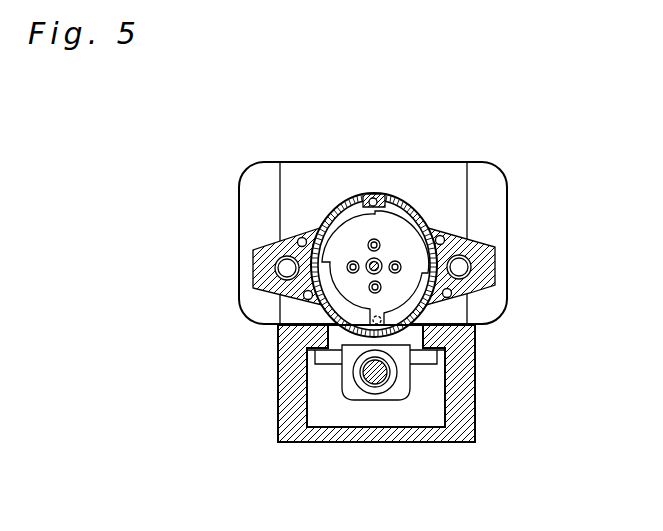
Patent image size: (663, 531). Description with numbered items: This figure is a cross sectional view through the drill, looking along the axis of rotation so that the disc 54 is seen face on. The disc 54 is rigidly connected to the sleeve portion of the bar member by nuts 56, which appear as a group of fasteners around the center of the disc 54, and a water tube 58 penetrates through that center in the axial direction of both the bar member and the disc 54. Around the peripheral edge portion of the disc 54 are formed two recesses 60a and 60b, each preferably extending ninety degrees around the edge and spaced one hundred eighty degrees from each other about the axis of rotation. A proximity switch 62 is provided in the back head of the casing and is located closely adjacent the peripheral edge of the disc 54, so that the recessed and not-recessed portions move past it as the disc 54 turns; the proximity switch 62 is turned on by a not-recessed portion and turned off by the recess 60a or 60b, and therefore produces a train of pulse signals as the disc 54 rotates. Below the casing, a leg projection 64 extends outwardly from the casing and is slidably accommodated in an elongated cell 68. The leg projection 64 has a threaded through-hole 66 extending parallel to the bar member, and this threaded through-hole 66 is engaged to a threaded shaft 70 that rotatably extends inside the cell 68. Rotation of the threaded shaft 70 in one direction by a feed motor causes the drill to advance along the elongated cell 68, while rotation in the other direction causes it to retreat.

The disc 54 is at (410, 248).
The nuts 56 is at (353, 261).
The water tube 58 is at (378, 258).
The recess 60a is at (323, 227).
The recess 60b is at (388, 317).
The proximity switch 62 is at (327, 328).
The leg projection 64 is at (347, 372).
The threaded through-hole 66 is at (378, 386).
The elongated cell 68 is at (460, 395).
The threaded shaft 70 is at (378, 386).